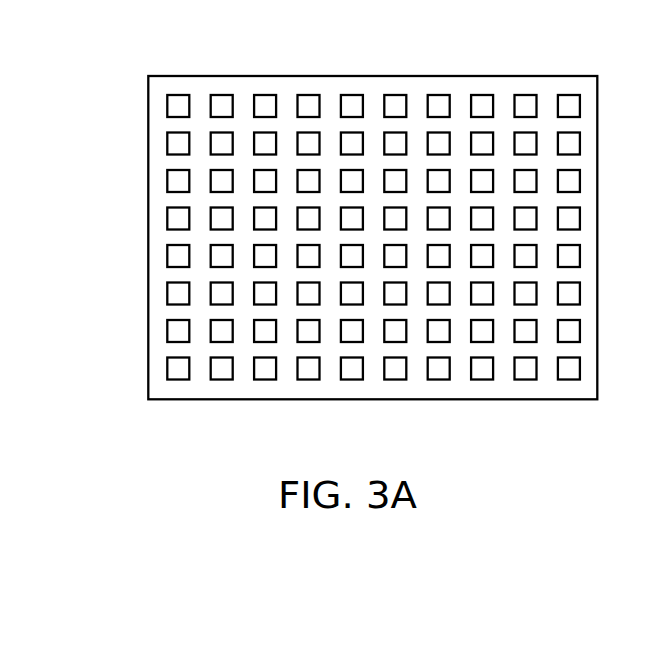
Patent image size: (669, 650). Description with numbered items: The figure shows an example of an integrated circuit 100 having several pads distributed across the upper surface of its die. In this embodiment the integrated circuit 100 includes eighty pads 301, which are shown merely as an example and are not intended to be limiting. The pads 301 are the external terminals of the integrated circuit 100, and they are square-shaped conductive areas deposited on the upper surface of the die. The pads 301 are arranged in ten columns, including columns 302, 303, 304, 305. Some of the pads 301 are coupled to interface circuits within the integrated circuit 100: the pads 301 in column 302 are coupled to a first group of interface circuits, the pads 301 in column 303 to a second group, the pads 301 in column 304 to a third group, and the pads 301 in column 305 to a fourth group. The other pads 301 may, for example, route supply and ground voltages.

The integrated circuit 100 is at (308, 76).
The pads 301 is at (167, 106).
The column 302 is at (178, 381).
The column 303 is at (308, 381).
The column 304 is at (438, 381).
The column 305 is at (568, 381).